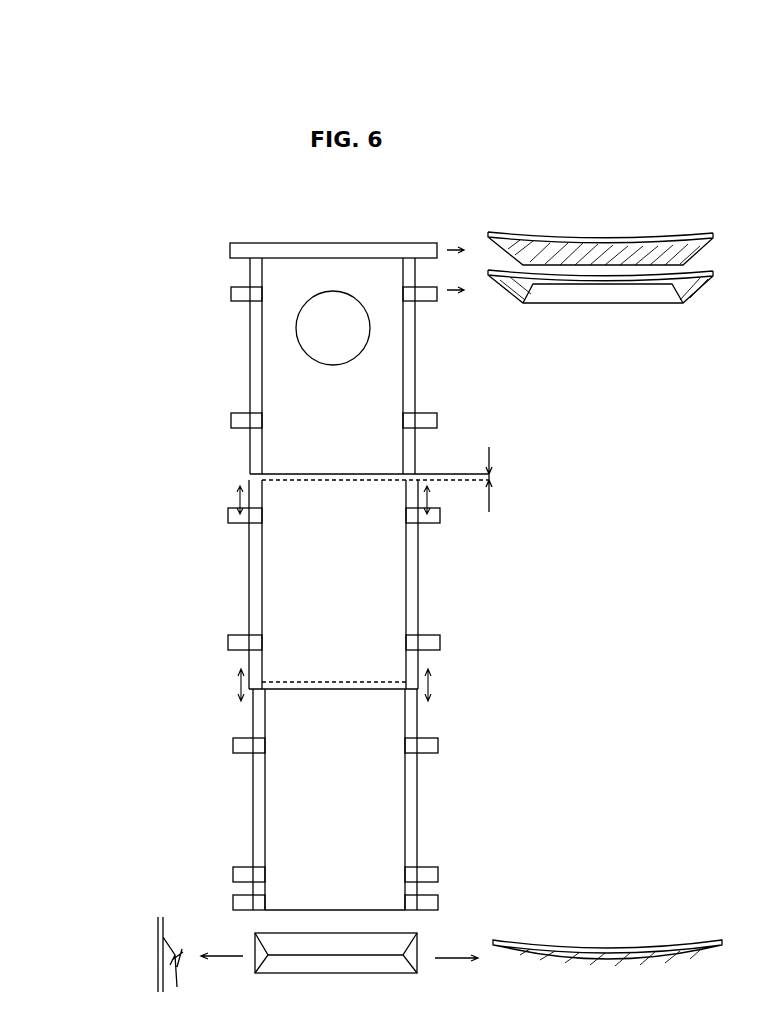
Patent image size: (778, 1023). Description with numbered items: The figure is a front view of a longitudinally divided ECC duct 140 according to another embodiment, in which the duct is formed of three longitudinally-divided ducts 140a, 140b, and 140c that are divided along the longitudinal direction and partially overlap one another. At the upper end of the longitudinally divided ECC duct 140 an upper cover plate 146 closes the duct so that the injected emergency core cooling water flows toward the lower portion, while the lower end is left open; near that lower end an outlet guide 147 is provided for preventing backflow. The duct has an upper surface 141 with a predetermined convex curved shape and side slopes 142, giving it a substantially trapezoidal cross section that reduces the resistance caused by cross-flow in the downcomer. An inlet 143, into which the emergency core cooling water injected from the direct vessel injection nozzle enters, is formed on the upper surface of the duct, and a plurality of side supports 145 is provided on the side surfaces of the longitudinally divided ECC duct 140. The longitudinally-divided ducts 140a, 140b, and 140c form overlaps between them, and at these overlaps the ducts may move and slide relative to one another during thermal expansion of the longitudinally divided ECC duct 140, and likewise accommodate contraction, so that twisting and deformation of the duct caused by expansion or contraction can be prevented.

The longitudinally divided ECC duct 140 is at (355, 207).
The longitudinally-divided duct 140a is at (284, 406).
The longitudinally-divided duct 140b is at (275, 584).
The longitudinally-divided duct 140c is at (253, 800).
The upper surface 141 is at (372, 610).
The side slopes 142 is at (418, 563).
The inlet 143 is at (350, 333).
The side supports 145 is at (437, 424).
The upper cover plate 146 is at (230, 250).
The outlet guide 147 is at (255, 944).